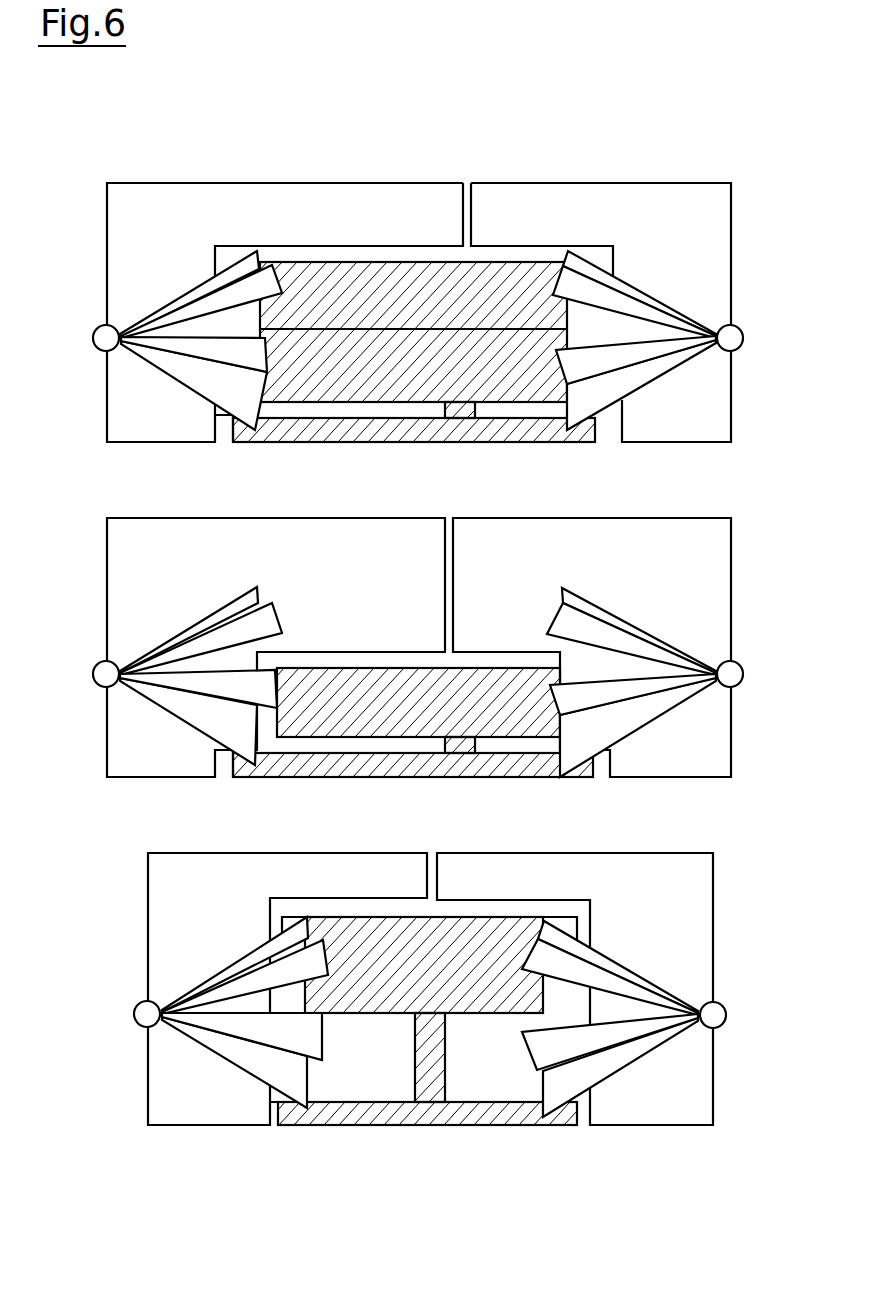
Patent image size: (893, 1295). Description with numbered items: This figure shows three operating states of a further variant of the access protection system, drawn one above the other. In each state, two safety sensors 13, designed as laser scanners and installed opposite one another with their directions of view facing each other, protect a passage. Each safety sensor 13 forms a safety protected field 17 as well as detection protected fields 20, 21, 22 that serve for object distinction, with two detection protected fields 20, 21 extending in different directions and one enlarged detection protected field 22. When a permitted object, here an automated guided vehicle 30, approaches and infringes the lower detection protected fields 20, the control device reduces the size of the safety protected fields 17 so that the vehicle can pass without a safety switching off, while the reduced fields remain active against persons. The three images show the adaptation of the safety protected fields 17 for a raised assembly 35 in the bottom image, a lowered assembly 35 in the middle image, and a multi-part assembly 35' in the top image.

The safety sensor 13 is at (103, 337).
The safety protected field 17 is at (300, 223).
The detection protected field 20 is at (208, 350).
The detection protected field 21 is at (247, 285).
The detection protected field 22 is at (212, 287).
The automated guided vehicle 30 is at (415, 420).
The assembly 35 is at (418, 840).
The multi-part assembly 35' is at (413, 263).